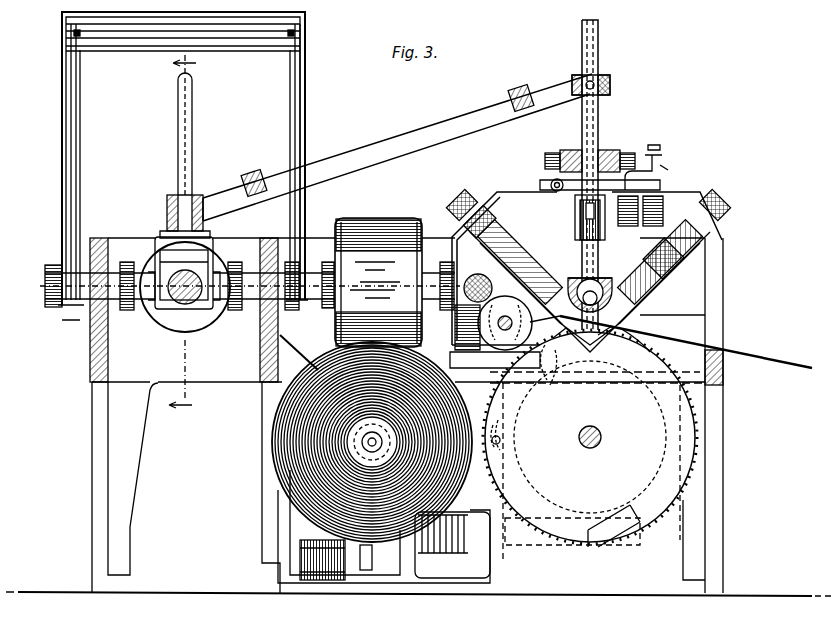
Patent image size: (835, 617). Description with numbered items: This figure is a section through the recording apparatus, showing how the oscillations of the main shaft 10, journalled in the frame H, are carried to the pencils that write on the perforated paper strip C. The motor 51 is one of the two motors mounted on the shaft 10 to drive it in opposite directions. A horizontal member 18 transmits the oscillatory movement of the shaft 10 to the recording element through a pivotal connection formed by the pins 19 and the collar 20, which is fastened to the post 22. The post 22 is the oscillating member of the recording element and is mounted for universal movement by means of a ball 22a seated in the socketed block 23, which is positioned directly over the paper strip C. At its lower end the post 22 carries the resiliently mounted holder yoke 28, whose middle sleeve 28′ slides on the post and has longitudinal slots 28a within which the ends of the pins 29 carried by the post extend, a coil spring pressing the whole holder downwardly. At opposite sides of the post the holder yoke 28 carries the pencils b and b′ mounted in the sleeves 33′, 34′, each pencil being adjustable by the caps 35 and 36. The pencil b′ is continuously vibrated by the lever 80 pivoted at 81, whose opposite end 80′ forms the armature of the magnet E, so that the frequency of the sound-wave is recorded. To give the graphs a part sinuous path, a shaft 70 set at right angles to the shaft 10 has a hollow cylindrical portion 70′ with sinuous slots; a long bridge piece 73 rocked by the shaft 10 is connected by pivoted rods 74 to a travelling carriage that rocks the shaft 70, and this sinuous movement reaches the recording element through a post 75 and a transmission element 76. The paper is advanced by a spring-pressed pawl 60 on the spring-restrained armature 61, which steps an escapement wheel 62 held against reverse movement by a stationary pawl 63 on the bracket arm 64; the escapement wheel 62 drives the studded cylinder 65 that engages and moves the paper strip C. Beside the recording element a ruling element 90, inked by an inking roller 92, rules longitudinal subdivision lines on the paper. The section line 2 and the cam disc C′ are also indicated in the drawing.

The section line 2- 2 is at (188, 246).
The bridge piece 73 is at (63, 167).
The pivoted rods 74 is at (82, 143).
The post 75 is at (193, 135).
The transmission element 76 is at (228, 198).
The frame H is at (100, 233).
The shaft 70 is at (177, 302).
The hollow cylindrical portion 70′ is at (212, 317).
The motor 51 is at (370, 240).
The shaft 10 is at (437, 262).
The cap 36 is at (484, 195).
The lever 80 is at (503, 182).
The horizontal member 18 is at (563, 160).
The pins 19 is at (560, 156).
The collar 20 is at (599, 160).
The armature end of lever 80′ is at (622, 180).
The holder yoke 28 is at (673, 210).
The cap 35 is at (735, 203).
The pivot 81 is at (553, 192).
The pins 29 is at (592, 203).
The longitudinal slots 28a is at (590, 220).
The post 22 is at (598, 47).
The ball 22a is at (630, 292).
The block 23 is at (650, 288).
The sleeve 28′ is at (690, 258).
The ruling element 90 is at (495, 321).
The inking roller 92 is at (462, 304).
The pencil b′ is at (560, 332).
The pencil b is at (603, 332).
The sleeve 34′ is at (630, 332).
The sleeve 33′ is at (547, 345).
The pawl 63 is at (513, 430).
The escapement wheel 62 is at (662, 455).
The spring-pressed pawl 60 is at (622, 485).
The studded cylinder 65 is at (688, 437).
The spring-restrained armature 61 is at (475, 538).
The magnet E is at (327, 587).
The bracket arm 64 is at (375, 583).
The cam disc C′ is at (287, 412).
The perforated paper strip C is at (773, 353).